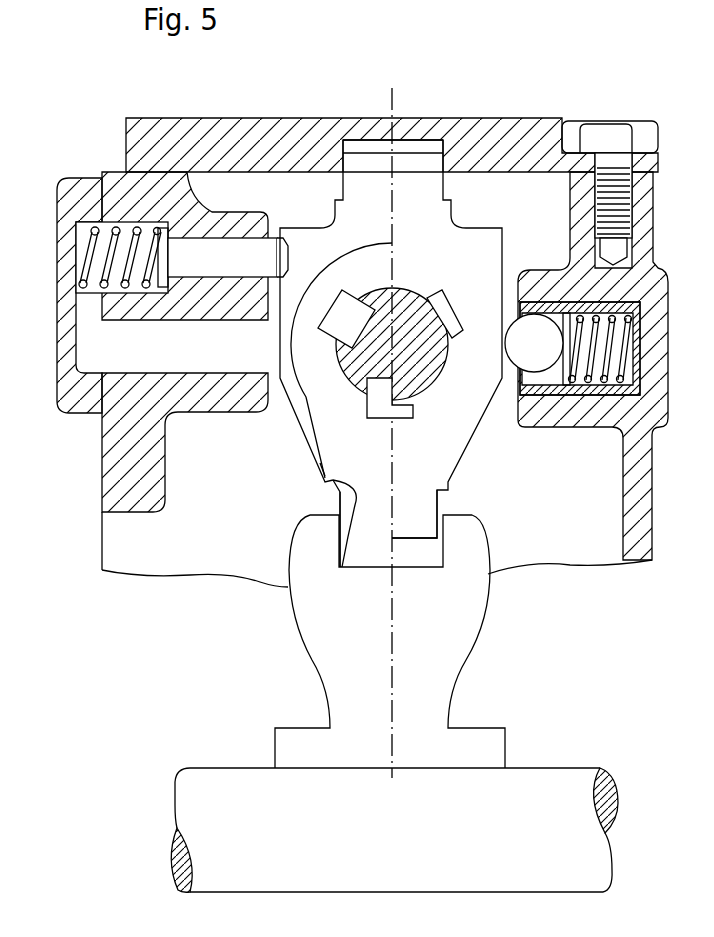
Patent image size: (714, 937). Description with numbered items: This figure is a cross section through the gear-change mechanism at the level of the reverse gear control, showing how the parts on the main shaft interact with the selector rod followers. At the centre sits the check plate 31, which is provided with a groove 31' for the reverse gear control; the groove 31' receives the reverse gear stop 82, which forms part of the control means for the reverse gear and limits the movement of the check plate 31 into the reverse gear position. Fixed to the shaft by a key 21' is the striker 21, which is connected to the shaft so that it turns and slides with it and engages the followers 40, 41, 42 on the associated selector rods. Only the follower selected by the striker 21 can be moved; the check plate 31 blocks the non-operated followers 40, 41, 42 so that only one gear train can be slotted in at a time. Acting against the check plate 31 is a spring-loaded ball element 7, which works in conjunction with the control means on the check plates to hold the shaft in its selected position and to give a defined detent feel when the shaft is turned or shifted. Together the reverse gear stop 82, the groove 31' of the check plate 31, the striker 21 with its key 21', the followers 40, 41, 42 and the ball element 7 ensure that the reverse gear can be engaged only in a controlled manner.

The reverse gear stop 82 is at (252, 252).
The check plate 31 is at (391, 322).
The groove 31' is at (400, 308).
The key 21' is at (402, 421).
The striker 21 is at (428, 523).
The follower 40 is at (437, 641).
The follower 41 is at (437, 641).
The follower 42 is at (448, 638).
The spring-loaded ball element 7 is at (557, 303).